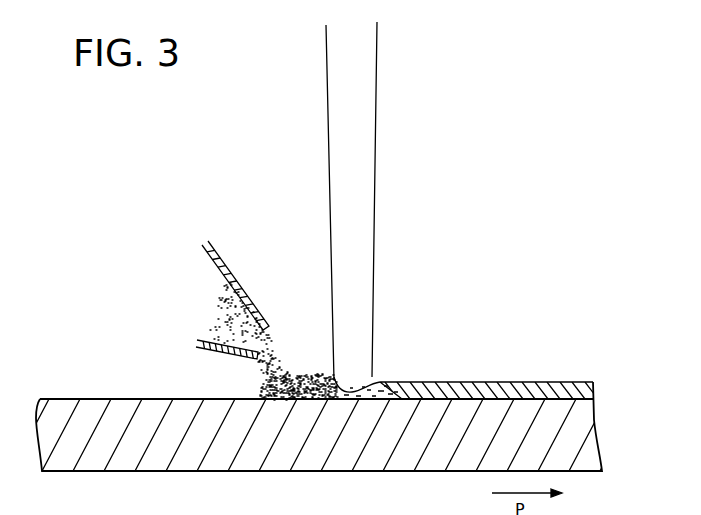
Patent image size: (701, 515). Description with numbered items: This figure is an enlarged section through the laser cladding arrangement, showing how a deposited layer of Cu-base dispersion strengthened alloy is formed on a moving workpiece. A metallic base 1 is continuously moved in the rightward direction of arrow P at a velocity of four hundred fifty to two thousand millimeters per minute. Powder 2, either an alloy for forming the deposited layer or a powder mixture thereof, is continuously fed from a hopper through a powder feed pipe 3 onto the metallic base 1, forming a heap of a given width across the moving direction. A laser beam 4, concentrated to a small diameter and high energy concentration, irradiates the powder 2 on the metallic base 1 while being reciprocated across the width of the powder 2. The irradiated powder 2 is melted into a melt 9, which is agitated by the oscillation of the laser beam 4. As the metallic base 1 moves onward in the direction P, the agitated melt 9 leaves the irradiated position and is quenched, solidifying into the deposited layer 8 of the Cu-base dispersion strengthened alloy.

The metallic base 1 is at (585, 433).
The powder 2 is at (296, 372).
The powder feed pipe 3 is at (227, 272).
The laser beam 4 is at (373, 173).
The deposited layer 8 is at (481, 381).
The melt 9 is at (380, 380).